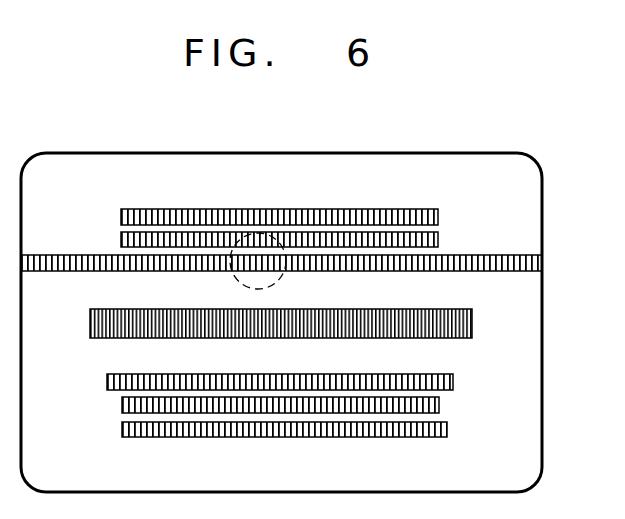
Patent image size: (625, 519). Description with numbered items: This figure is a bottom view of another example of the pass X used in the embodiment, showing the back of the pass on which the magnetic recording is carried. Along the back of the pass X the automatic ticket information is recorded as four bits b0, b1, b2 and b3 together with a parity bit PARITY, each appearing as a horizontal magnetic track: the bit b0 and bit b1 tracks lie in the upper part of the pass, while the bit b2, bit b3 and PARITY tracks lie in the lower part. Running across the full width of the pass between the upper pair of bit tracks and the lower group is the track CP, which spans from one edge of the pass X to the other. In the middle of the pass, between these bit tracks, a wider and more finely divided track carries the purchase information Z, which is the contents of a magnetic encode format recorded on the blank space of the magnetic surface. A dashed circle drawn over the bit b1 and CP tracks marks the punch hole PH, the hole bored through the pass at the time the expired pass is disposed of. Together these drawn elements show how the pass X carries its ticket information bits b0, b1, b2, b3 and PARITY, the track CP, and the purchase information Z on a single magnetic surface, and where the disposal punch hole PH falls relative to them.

The pass X is at (528, 184).
The bit b0 is at (121, 214).
The bit b1 is at (121, 239).
The clock pulse track CP is at (23, 272).
The punch hole PH is at (282, 281).
The purchase information Z is at (472, 327).
The bit b2 is at (107, 382).
The bit b3 is at (122, 406).
The parity bit PARITY is at (122, 430).